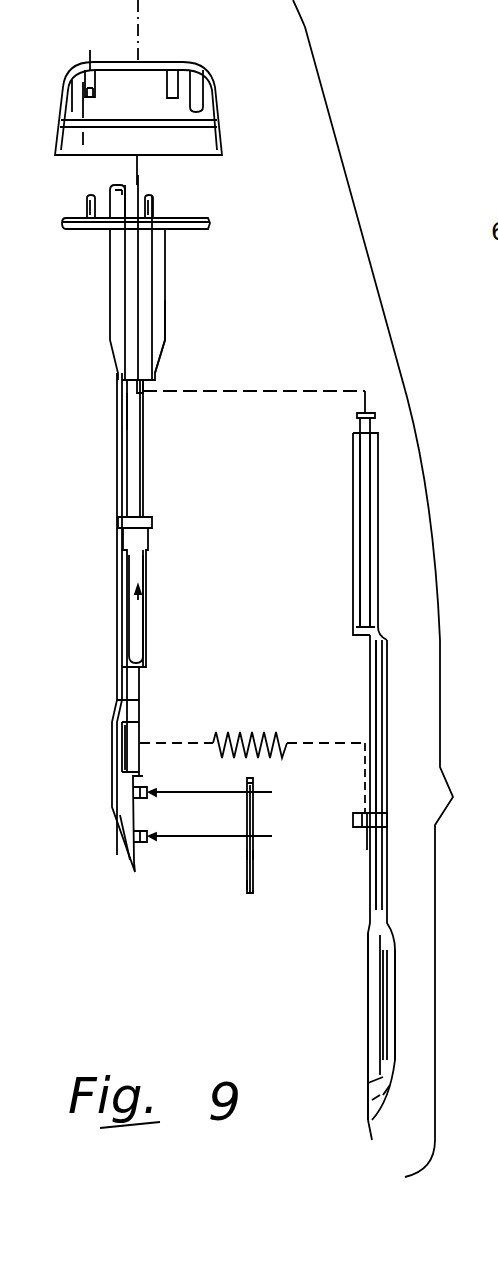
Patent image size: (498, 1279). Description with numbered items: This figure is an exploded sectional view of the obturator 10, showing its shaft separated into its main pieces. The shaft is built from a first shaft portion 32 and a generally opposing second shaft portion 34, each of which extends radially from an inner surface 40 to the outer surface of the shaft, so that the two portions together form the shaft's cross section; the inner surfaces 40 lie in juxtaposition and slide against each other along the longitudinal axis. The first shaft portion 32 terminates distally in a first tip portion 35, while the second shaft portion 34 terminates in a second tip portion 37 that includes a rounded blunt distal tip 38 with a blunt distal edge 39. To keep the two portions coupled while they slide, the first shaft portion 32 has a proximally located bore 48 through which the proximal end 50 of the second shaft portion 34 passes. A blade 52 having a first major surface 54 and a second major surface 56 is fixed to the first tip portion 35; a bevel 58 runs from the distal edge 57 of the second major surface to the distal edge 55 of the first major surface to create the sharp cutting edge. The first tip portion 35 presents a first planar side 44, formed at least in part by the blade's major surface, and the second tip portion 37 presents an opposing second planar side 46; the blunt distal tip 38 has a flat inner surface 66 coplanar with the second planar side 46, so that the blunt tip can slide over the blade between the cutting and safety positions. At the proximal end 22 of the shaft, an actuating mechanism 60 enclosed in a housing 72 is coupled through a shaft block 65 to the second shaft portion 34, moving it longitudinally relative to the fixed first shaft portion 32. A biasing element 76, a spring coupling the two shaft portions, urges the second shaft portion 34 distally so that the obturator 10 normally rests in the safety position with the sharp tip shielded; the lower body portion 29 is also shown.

The obturator 10 is at (267, 347).
The proximal end 22 is at (165, 236).
The tapered lower body portion 29 is at (166, 340).
The first shaft portion 32 is at (135, 622).
The second shaft portion 34 is at (387, 745).
The first tip portion 35 is at (112, 817).
The second tip portion 37 is at (397, 1050).
The blunt distal tip 38 is at (383, 1107).
The blunt distal edge 39 is at (372, 1140).
The inner surface 40 is at (130, 352).
The first planar side 44 is at (137, 722).
The second planar side 46 is at (367, 1013).
The bore 48 is at (128, 393).
The proximal end of the second shaft portion 50 is at (378, 480).
The blade 52 is at (266, 817).
The first major surface 54 is at (255, 853).
The distal edge of the first major surface 55 is at (255, 897).
The second major surface 56 is at (243, 855).
The distal edge of the second major surface 57 is at (245, 885).
The bevel 58 is at (243, 897).
The actuating mechanism 60 is at (170, 101).
The shaft block 65 is at (372, 413).
The flat inner surface 66 is at (370, 1110).
The housing 72 is at (222, 98).
The biasing element 76 is at (248, 730).